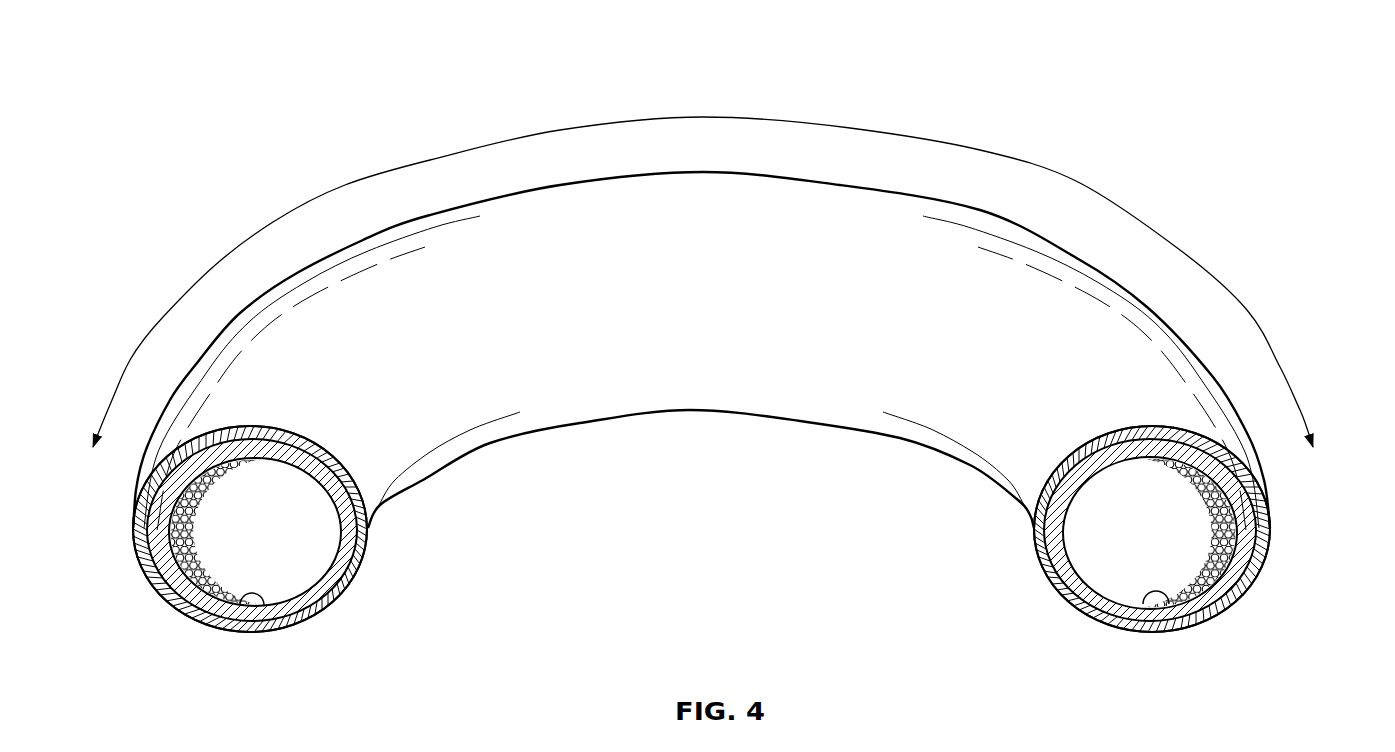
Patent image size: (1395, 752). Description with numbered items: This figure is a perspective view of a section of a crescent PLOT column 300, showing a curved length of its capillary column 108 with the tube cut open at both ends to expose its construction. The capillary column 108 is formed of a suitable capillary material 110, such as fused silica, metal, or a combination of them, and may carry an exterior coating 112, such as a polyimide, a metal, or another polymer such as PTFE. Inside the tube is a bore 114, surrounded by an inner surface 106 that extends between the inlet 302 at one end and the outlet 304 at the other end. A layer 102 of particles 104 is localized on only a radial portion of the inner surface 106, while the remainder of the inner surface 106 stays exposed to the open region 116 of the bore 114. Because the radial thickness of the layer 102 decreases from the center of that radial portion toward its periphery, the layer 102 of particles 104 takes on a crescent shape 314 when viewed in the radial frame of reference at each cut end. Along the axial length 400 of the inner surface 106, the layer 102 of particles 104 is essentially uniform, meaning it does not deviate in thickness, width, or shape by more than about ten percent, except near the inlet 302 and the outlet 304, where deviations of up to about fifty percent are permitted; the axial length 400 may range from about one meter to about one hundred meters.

The crescent PLOT column 300 is at (1118, 90).
The axial length 400 is at (742, 118).
The layer 102 is at (215, 498).
The particles 104 is at (170, 532).
The inner surface 106 is at (278, 610).
The capillary column 108 is at (826, 373).
The capillary material 110 is at (188, 604).
The exterior coating 112 is at (162, 589).
The bore 114 is at (239, 537).
The open region 116 is at (292, 536).
The inlet 302 is at (263, 534).
The outlet 304 is at (1130, 532).
The crescent shape 314 is at (142, 507).